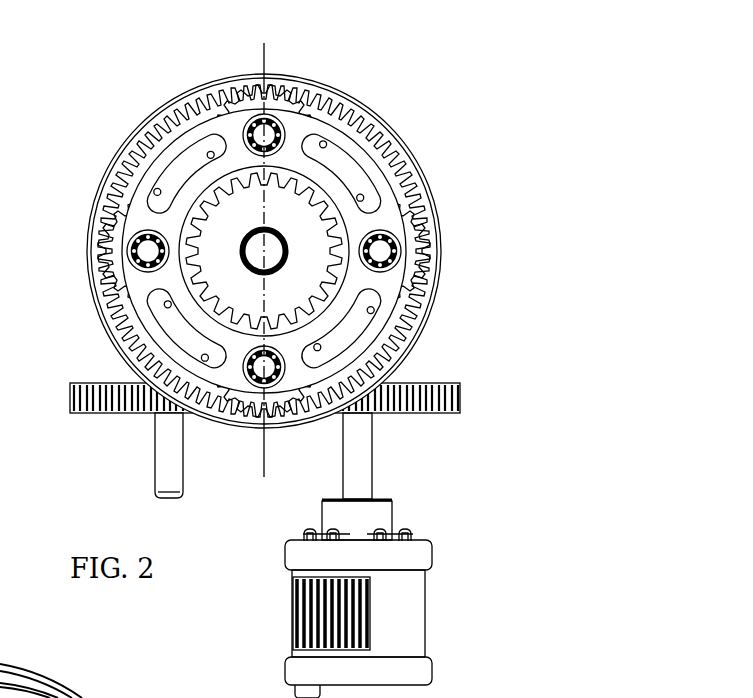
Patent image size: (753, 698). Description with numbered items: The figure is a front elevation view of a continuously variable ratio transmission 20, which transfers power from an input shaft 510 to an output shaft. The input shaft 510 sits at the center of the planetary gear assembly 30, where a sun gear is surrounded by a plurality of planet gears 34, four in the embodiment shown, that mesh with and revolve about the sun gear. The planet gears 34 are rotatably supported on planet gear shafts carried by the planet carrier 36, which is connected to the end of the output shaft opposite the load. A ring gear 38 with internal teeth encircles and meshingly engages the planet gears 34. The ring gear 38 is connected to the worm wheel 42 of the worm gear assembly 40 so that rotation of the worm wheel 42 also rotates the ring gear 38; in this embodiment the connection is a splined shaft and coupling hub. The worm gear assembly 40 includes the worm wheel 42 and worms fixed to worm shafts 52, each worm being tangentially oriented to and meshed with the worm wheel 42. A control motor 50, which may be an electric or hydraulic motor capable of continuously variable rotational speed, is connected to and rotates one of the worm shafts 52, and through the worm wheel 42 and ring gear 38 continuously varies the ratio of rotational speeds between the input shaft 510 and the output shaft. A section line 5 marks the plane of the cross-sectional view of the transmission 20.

The continuously variable ratio transmission 20 is at (418, 65).
The planetary gear assembly 30 is at (97, 107).
The planet gears 34 is at (233, 82).
The planet carrier 36 is at (138, 203).
The ring gear 38 is at (383, 117).
The input shaft 510 is at (276, 258).
The section line 5- 5 is at (265, 55).
The worm shaft 52 is at (365, 440).
The control motor 50 is at (437, 615).
The worm wheel 42 is at (103, 697).
The worm gear assembly 40 is at (109, 690).